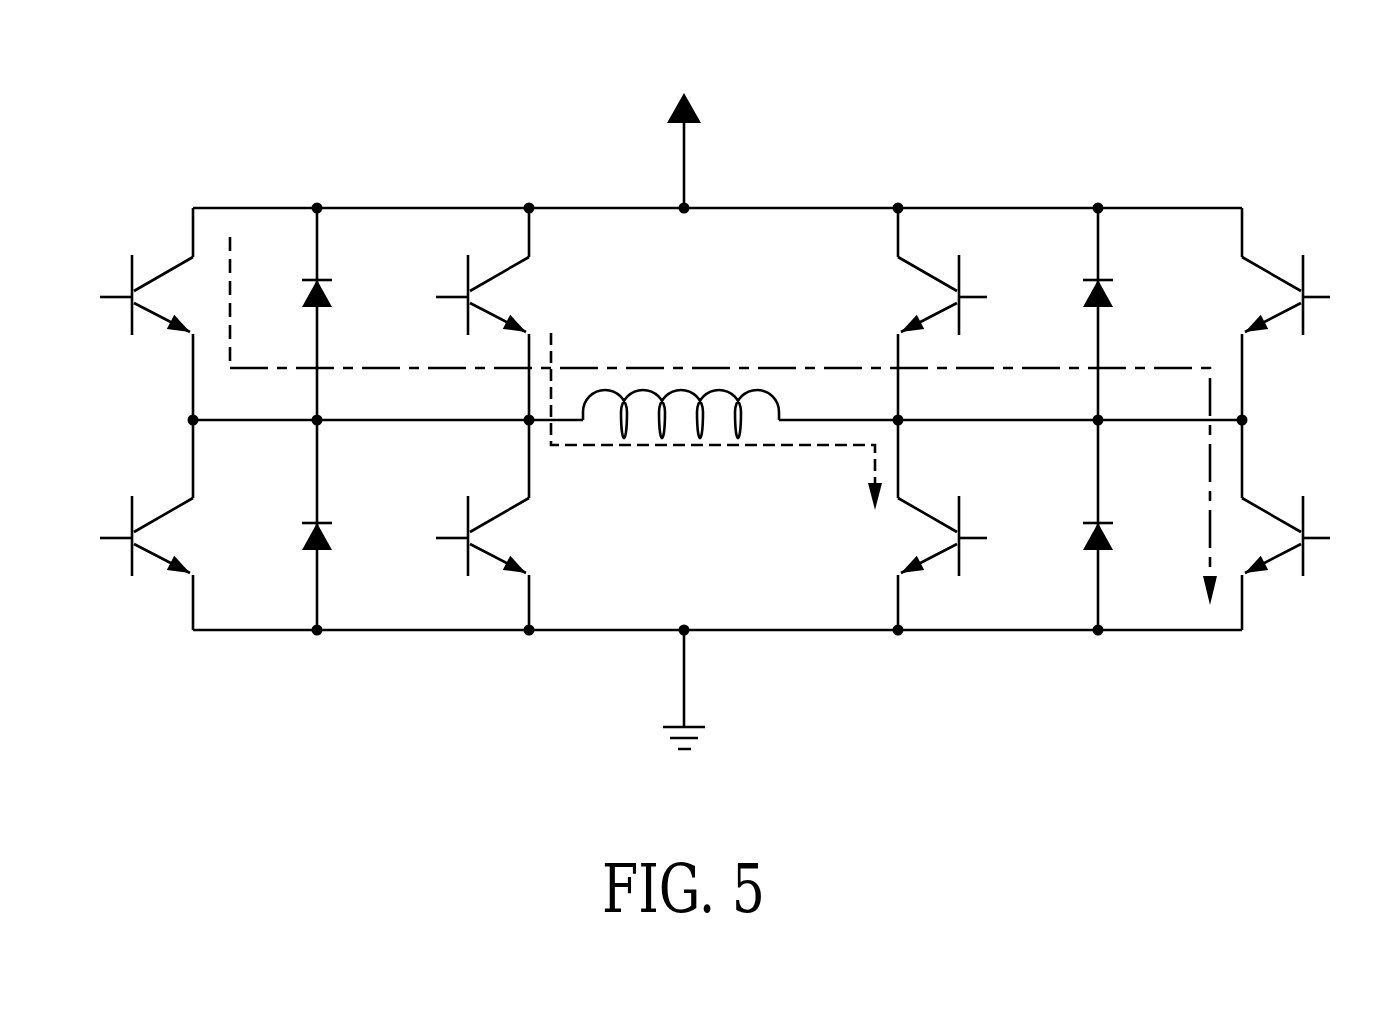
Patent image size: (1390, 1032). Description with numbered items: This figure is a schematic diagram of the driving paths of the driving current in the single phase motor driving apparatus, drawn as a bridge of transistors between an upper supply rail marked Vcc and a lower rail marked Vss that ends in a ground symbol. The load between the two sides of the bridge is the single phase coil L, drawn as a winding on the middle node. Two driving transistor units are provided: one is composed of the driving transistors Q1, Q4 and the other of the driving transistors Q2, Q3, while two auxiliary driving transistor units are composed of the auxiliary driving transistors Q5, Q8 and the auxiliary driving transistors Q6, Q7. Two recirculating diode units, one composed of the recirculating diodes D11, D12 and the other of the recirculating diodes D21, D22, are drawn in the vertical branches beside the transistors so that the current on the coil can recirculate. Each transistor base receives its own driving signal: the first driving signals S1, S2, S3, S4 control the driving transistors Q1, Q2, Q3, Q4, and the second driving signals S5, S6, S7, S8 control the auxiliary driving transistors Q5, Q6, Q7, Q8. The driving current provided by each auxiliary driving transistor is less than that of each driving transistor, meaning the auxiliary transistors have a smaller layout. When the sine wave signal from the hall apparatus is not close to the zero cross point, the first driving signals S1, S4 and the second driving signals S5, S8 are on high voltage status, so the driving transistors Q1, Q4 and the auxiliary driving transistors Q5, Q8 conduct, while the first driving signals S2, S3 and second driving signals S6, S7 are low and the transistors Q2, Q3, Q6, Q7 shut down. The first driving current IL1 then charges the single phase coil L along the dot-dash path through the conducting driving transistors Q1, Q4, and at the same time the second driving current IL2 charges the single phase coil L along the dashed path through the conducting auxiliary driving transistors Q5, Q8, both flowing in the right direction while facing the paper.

The driving transistor Q1 is at (154, 315).
The driving transistor Q2 is at (154, 557).
The driving transistor Q3 is at (1281, 315).
The driving transistor Q4 is at (1281, 557).
The auxiliary driving transistor Q5 is at (519, 295).
The auxiliary driving transistor Q6 is at (519, 536).
The auxiliary driving transistor Q7 is at (910, 295).
The auxiliary driving transistor Q8 is at (910, 536).
The first driving signal S1 is at (97, 296).
The first driving signal S2 is at (97, 538).
The first driving signal S3 is at (1344, 296).
The first driving signal S4 is at (1344, 538).
The second driving signal S5 is at (434, 296).
The second driving signal S6 is at (434, 538).
The second driving signal S7 is at (999, 296).
The second driving signal S8 is at (999, 538).
The recirculating diode D11 is at (341, 321).
The recirculating diode D21 is at (341, 559).
The recirculating diode D22 is at (1124, 321).
The recirculating diode D12 is at (1124, 559).
The single phase coil L is at (696, 410).
The first driving current IL1 is at (694, 421).
The second driving current IL2 is at (716, 421).
The supply voltage Vcc is at (684, 130).
The ground voltage Vss is at (683, 716).